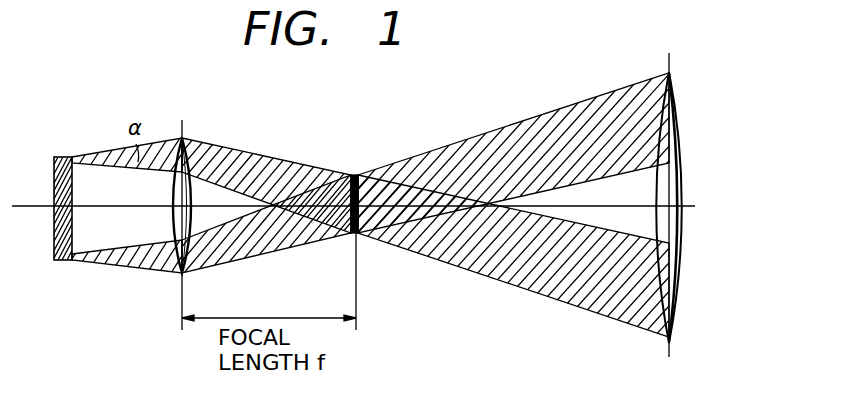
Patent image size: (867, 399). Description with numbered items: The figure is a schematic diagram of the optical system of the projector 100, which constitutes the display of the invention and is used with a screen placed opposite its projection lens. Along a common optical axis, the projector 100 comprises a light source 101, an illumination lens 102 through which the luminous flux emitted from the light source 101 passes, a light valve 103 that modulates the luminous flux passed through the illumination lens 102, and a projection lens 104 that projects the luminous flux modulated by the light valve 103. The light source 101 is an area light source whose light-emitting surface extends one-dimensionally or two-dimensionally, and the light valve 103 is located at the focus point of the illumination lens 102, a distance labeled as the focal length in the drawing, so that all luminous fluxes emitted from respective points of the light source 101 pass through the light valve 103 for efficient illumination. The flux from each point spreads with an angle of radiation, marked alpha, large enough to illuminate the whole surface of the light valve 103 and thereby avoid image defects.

The projector 100 is at (450, 127).
The light source 101 is at (58, 157).
The illumination lens 102 is at (199, 150).
The light valve 103 is at (347, 175).
The projection lens 104 is at (676, 110).